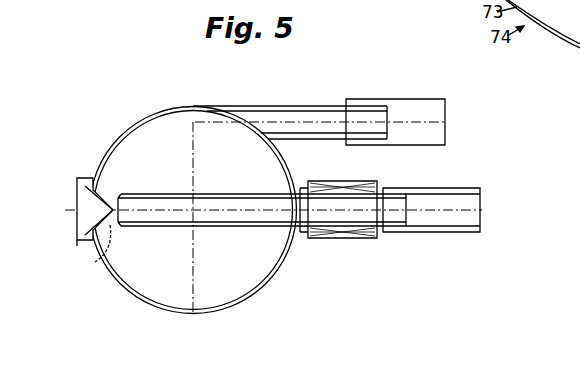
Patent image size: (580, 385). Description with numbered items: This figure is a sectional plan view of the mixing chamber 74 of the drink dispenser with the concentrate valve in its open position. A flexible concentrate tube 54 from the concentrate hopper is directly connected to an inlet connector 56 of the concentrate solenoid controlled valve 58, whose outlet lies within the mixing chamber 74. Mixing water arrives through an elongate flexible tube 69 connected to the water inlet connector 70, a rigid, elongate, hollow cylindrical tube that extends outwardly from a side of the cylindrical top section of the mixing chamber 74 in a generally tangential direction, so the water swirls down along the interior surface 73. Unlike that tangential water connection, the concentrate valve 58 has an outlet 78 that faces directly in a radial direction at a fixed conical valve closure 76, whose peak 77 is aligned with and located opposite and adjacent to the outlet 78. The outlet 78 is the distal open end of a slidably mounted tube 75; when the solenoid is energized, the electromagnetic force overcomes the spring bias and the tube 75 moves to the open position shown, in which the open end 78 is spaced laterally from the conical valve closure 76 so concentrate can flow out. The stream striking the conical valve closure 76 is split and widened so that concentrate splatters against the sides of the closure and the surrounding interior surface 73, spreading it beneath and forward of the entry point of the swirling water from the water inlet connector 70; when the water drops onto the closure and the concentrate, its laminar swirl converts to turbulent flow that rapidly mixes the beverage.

The flexible concentrate tube 54 is at (470, 188).
The inlet connector 56 is at (378, 237).
The concentrate solenoid controlled valve 58 is at (247, 230).
The elongate flexible tube 69 is at (418, 99).
The water inlet connector 70 is at (312, 106).
The interior surface 73 is at (133, 283).
The mixing chamber 74 is at (250, 305).
The slidably mounted tube 75 is at (245, 193).
The conical valve closure 76 is at (77, 241).
The peak 77 is at (96, 259).
The outlet 78 is at (95, 178).